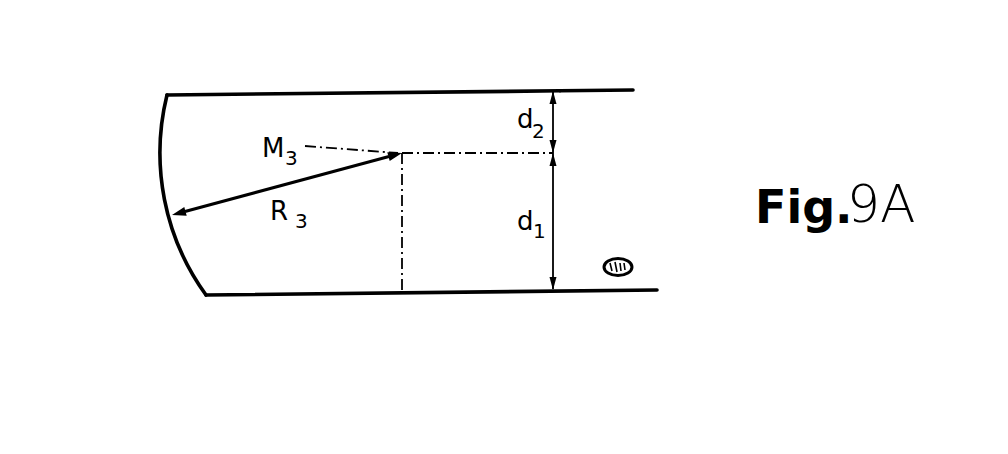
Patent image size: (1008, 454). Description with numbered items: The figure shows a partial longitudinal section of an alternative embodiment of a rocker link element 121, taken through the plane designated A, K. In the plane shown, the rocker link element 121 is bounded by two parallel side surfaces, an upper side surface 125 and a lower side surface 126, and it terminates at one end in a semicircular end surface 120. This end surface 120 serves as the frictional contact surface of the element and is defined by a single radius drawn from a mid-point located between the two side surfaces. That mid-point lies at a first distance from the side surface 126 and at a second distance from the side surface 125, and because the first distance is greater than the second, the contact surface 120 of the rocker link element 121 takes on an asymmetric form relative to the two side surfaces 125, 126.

The semicircular end surface 120 is at (160, 135).
The rocker link element 121 is at (608, 113).
The side surface 125 is at (278, 94).
The side surface 126 is at (307, 297).